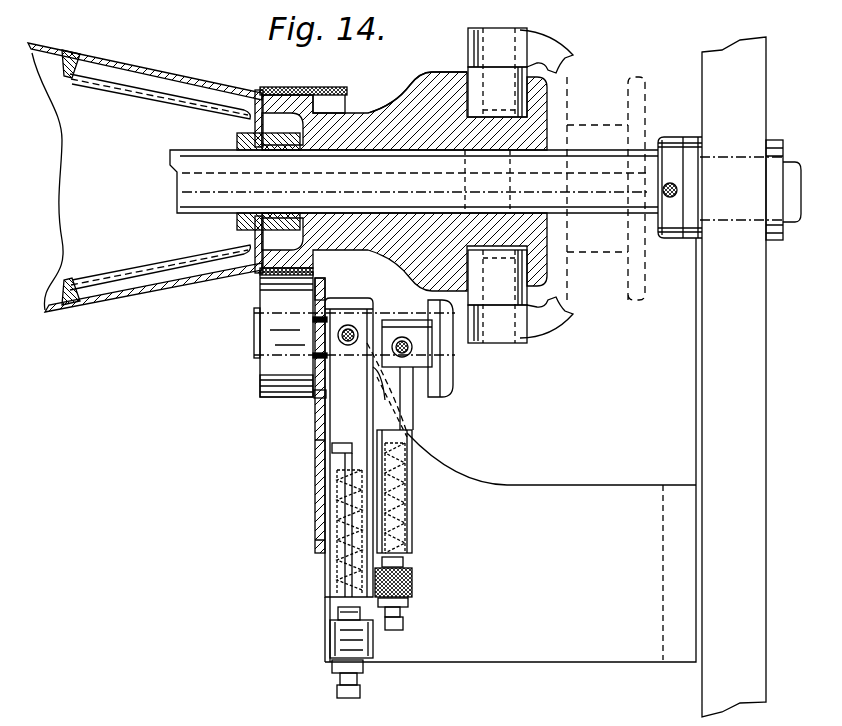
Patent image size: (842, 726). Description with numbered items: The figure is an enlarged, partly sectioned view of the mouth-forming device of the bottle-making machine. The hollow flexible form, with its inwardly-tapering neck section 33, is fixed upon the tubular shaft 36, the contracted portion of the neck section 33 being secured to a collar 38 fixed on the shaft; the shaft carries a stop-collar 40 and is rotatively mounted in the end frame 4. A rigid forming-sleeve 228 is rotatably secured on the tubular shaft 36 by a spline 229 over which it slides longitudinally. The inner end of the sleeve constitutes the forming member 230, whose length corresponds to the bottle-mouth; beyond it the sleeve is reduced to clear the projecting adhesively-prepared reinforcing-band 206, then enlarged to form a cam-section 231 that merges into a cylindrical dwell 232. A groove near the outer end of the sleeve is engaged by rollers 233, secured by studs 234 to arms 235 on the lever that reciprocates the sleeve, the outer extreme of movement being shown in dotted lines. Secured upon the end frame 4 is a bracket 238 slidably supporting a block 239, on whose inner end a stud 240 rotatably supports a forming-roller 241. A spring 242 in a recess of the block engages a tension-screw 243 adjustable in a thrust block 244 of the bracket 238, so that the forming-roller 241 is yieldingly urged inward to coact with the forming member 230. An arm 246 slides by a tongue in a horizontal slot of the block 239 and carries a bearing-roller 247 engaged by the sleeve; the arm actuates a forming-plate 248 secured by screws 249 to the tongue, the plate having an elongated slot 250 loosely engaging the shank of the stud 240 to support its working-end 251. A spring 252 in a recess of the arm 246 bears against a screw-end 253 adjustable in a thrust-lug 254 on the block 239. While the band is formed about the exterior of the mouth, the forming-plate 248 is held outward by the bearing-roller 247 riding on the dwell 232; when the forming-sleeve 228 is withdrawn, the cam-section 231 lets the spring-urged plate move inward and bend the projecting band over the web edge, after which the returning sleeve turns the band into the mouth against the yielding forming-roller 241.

The end frame 4 is at (734, 377).
The neck section 33 is at (160, 93).
The tubular shaft 36 is at (414, 181).
The collar 38 is at (278, 152).
The stop-collar 40 is at (678, 240).
The reinforcing-band 206 is at (337, 92).
The forming-sleeve 228 is at (366, 123).
The spline 229 is at (598, 153).
The forming member 230 is at (318, 89).
The cam-section 231 is at (399, 92).
The dwell 232 is at (448, 62).
The rollers 233 is at (505, 92).
The studs 234 is at (500, 28).
The arms 235 is at (566, 48).
The bracket 238 is at (510, 450).
The block 239 is at (330, 574).
The stud 240 is at (258, 336).
The forming-roller 241 is at (260, 384).
The spring 242 is at (345, 585).
The tension-screw 243 is at (380, 615).
The thrust block 244 is at (330, 643).
The arm 246 is at (413, 427).
The bearing-roller 247 is at (450, 386).
The forming-plate 248 is at (316, 425).
The screws 249 is at (316, 530).
The elongated slot 250 is at (318, 398).
The working-end 251 is at (326, 289).
The spring 252 is at (405, 537).
The screw-end 253 is at (404, 561).
The thrust-lug 254 is at (412, 584).